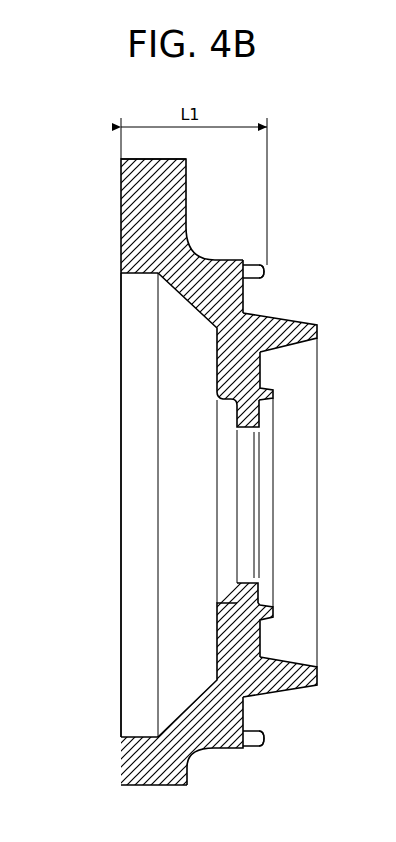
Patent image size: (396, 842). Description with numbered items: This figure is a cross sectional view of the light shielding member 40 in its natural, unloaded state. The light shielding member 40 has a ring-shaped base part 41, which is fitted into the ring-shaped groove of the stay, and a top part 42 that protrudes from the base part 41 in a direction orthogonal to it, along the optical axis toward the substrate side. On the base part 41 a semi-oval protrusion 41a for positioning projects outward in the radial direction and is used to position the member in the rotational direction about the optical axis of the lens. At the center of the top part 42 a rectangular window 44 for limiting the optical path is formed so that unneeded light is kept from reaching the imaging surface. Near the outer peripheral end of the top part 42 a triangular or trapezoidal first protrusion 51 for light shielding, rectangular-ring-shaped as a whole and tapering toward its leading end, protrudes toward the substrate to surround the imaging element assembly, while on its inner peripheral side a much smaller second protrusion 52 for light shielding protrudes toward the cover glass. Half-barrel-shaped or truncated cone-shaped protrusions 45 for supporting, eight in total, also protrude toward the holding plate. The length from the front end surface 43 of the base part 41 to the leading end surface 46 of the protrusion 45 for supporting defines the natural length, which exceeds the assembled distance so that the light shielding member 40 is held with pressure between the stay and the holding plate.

The light shielding member 40 is at (285, 296).
The ring-shaped base part 41 is at (150, 277).
The semi-oval protrusion for positioning 41a is at (140, 176).
The top part 42 is at (217, 360).
The front end surface 43 is at (120, 237).
The rectangular window for limiting an optical path 44 is at (241, 430).
The protrusion for supporting 45 is at (253, 265).
The leading end surface 46 is at (267, 271).
The first protrusion for light shielding 51 is at (285, 343).
The second protrusion for light shielding 52 is at (273, 613).